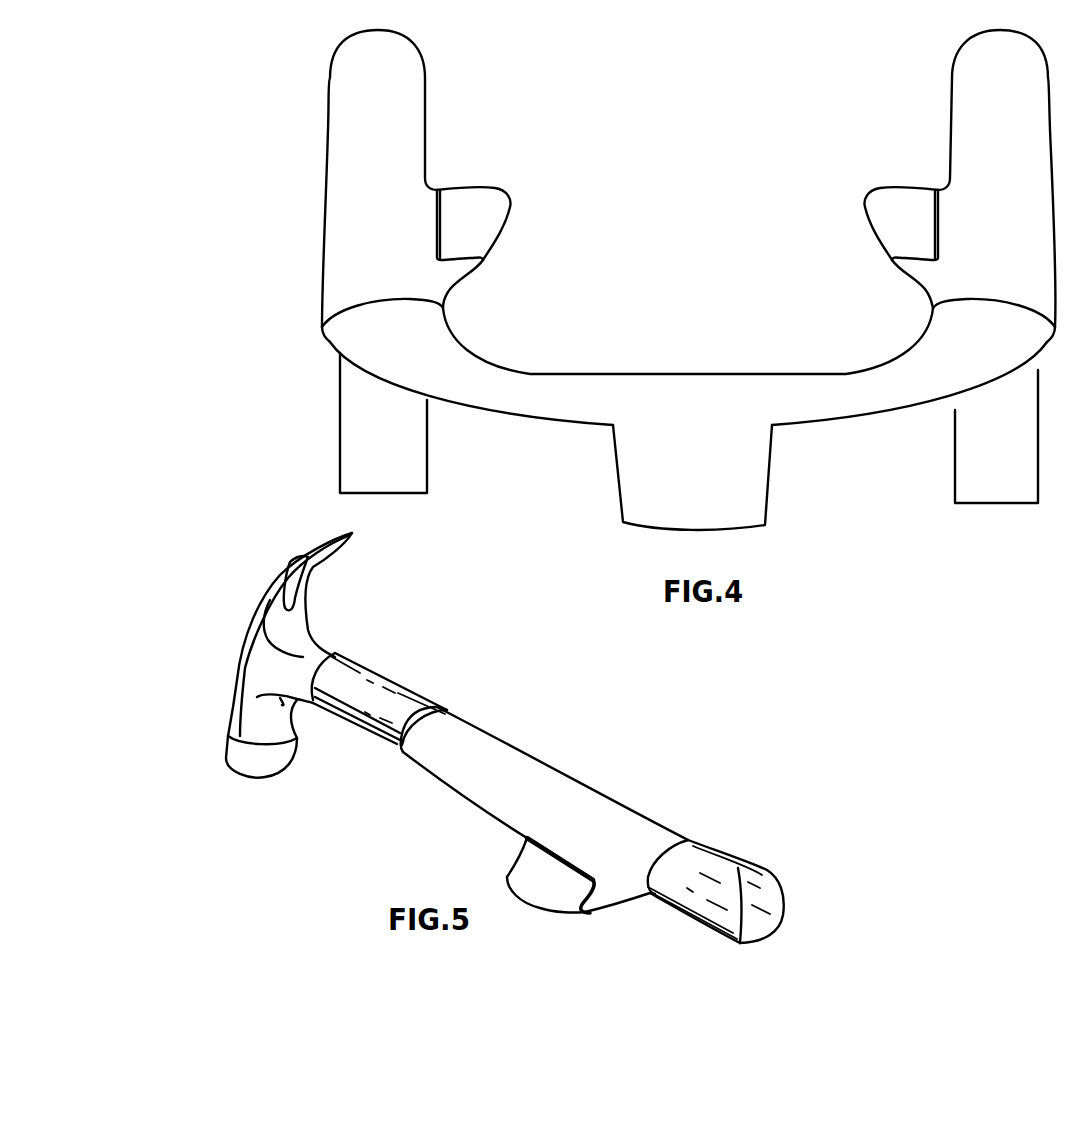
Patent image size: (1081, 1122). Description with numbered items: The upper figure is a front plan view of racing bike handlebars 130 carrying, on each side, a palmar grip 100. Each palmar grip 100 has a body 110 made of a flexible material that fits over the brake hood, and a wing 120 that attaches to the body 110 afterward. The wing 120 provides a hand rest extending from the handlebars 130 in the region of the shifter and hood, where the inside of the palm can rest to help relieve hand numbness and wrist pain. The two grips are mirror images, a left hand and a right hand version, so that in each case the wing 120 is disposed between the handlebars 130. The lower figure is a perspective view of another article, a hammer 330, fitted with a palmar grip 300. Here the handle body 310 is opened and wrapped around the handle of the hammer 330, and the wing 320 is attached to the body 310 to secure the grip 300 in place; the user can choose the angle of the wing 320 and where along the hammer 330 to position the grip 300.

In FIG. 4, the palmar grip 100 is at (689, 280).
In FIG. 4, the body 110 is at (393, 254).
In FIG. 4, the wing 120 is at (485, 234).
In FIG. 4, the handlebars 130 is at (672, 380).
In FIG. 5, the palmar grip 300 is at (505, 738).
In FIG. 5, the handle body 310 is at (548, 795).
In FIG. 5, the wing 320 is at (507, 877).
In FIG. 5, the hammer 330 is at (398, 688).